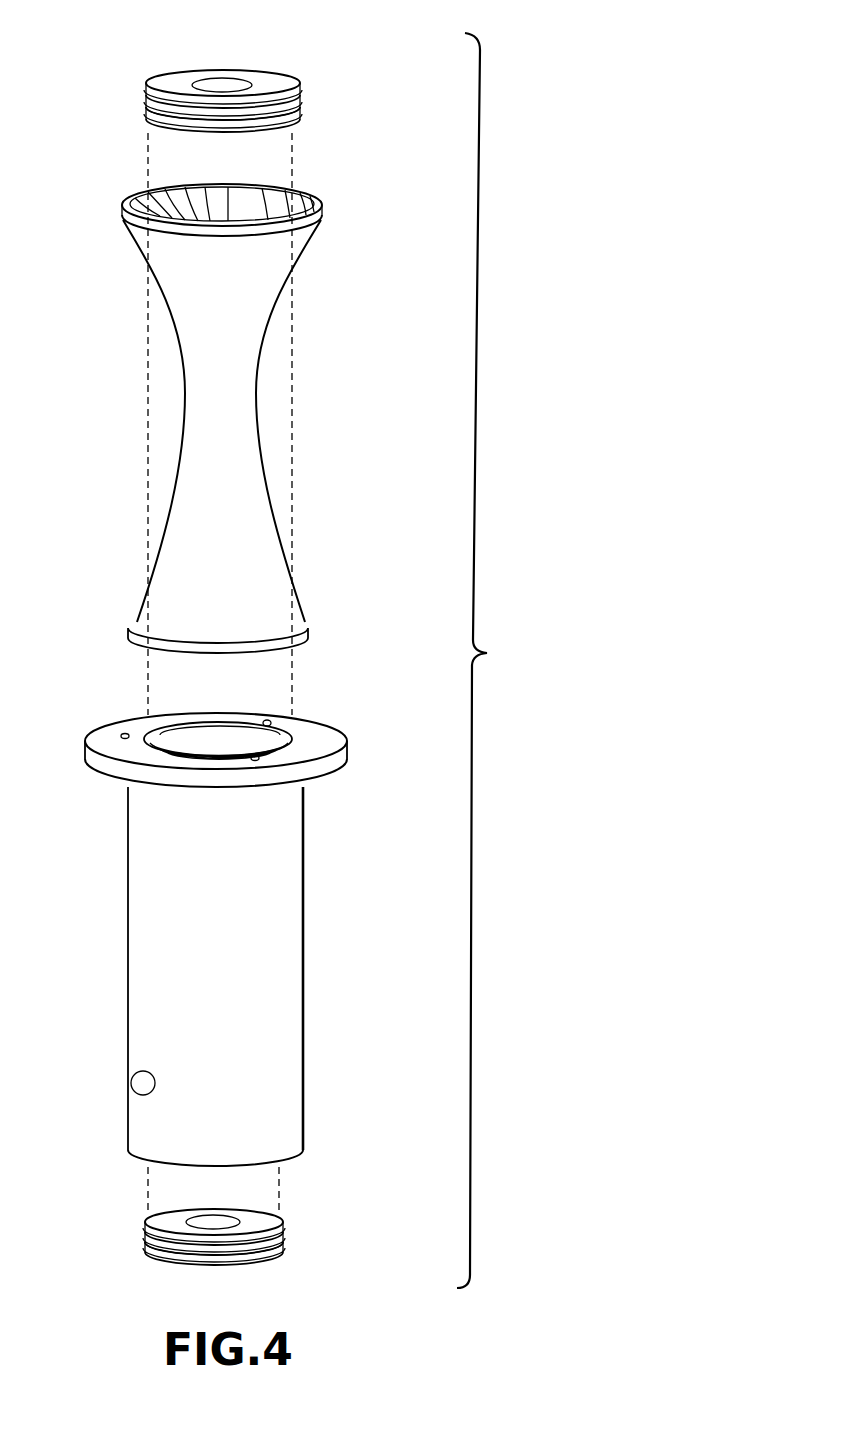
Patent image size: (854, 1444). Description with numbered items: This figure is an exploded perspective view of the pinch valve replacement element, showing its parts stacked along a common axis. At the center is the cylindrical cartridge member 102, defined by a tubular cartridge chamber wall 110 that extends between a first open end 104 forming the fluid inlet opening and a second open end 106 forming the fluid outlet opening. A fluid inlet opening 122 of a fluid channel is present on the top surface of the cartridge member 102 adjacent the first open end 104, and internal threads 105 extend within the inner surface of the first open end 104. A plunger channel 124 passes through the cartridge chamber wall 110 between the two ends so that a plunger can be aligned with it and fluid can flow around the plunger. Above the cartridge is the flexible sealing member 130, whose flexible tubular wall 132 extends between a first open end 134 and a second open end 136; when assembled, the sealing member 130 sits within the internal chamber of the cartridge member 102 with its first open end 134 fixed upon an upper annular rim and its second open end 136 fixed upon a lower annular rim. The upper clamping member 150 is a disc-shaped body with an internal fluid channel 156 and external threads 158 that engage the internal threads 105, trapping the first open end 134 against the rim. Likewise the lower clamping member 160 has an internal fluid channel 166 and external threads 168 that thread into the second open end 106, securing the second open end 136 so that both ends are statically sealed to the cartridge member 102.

The cartridge member 102 is at (230, 931).
The first open end 104 is at (293, 735).
The internal threads 105 is at (280, 742).
The second open end 106 is at (283, 1162).
The cartridge chamber wall 110 is at (290, 843).
The fluid inlet opening 122 is at (125, 735).
The plunger channel 124 is at (142, 1083).
The flexible sealing member 130 is at (237, 406).
The flexible tubular wall 132 is at (260, 264).
The first open end of flexible sealing member 134 is at (127, 212).
The second open end of flexible sealing member 136 is at (155, 647).
The upper clamping member 150 is at (268, 85).
The internal fluid channel 156 is at (222, 86).
The external threads 158 is at (152, 103).
The lower clamping member 160 is at (255, 1262).
The internal fluid channel 166 is at (207, 1223).
The external threads 168 is at (280, 1237).